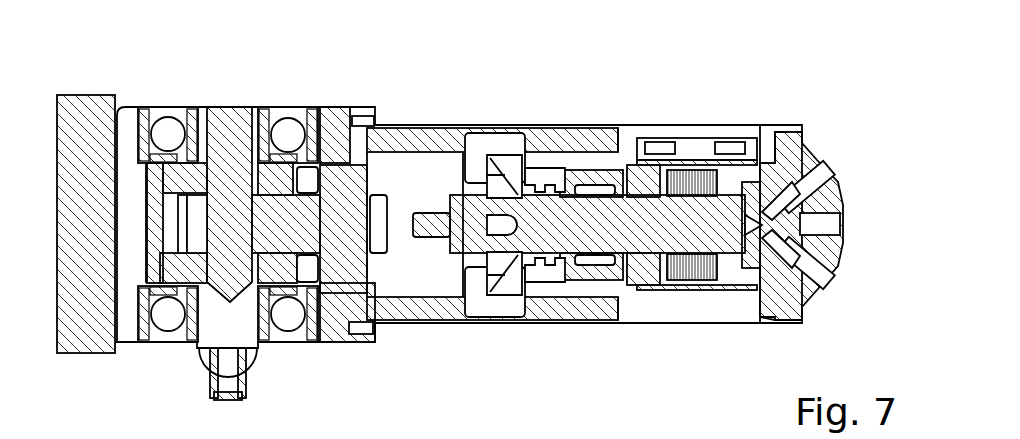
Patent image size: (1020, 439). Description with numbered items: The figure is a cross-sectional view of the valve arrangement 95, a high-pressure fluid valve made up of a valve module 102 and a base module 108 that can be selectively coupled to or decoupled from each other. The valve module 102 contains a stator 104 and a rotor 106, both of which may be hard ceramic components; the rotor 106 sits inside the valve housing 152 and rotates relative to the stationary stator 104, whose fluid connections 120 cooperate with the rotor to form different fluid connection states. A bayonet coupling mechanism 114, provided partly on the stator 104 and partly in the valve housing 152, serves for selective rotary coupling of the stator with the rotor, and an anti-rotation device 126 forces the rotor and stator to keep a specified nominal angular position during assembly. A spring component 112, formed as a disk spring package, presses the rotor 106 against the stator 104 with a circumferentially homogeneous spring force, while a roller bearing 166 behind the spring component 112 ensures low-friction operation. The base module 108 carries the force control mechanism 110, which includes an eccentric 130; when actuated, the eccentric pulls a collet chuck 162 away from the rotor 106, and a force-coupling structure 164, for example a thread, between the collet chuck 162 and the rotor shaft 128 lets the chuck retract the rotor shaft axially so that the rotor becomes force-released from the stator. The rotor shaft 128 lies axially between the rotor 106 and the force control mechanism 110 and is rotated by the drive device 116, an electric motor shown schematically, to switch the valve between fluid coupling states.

The valve arrangement 95 is at (814, 76).
The valve module 102 is at (803, 75).
The stator 104 is at (805, 290).
The rotor 106 is at (755, 222).
The base module 108 is at (115, 82).
The force control mechanism 110 is at (381, 270).
The spring component 112 is at (700, 166).
The coupling mechanism 114 is at (773, 310).
The drive device 116 is at (272, 223).
The fluid connections 120 is at (830, 226).
The anti-rotation device 126 is at (703, 158).
The rotor shaft 128 is at (582, 232).
The eccentric 130 is at (432, 433).
The valve housing 152 is at (673, 300).
The collet chuck 162 is at (422, 267).
The force-coupling structure 164 is at (473, 263).
The roller bearing 166 is at (630, 185).